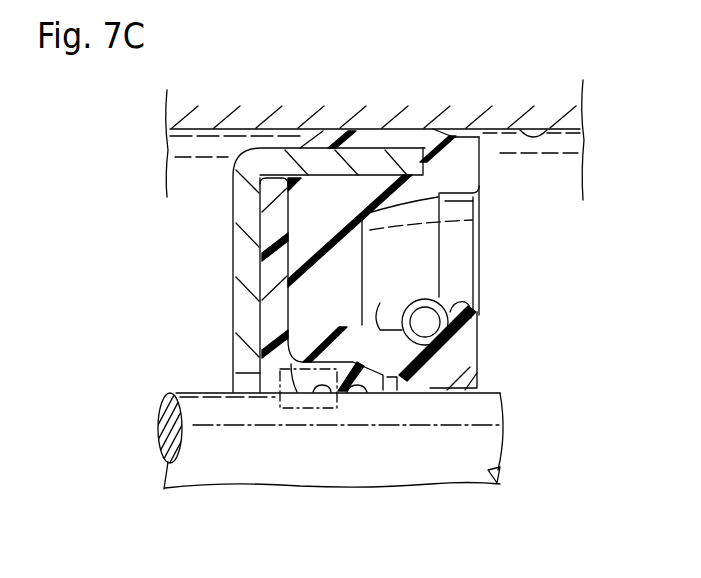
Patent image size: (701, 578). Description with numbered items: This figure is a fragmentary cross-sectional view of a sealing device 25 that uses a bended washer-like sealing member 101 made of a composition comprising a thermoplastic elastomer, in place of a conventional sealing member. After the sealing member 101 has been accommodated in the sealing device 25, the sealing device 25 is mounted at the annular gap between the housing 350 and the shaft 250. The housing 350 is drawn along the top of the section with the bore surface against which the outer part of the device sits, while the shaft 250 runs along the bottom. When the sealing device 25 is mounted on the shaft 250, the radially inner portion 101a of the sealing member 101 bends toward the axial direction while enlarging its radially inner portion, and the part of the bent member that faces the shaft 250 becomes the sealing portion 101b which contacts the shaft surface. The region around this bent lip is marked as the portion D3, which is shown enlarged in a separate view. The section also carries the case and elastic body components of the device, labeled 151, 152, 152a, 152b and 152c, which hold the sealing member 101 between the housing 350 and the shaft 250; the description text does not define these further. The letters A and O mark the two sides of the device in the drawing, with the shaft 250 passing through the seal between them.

The housing 350 is at (551, 128).
The shaft 250 is at (485, 437).
The sealing device 25 is at (537, 253).
The reinforcing metal case 151 is at (235, 247).
The sealing member 101 is at (272, 278).
The radially inner portion 101a is at (398, 390).
The sealing portion 101b is at (370, 390).
The elastic body 152 is at (368, 213).
The lip portion 152a is at (478, 382).
The outer peripheral portion 152b is at (402, 133).
The connecting web portion 152c is at (305, 297).
The portion D3 is at (334, 404).
The air side A is at (78, 300).
The oil side O is at (686, 297).